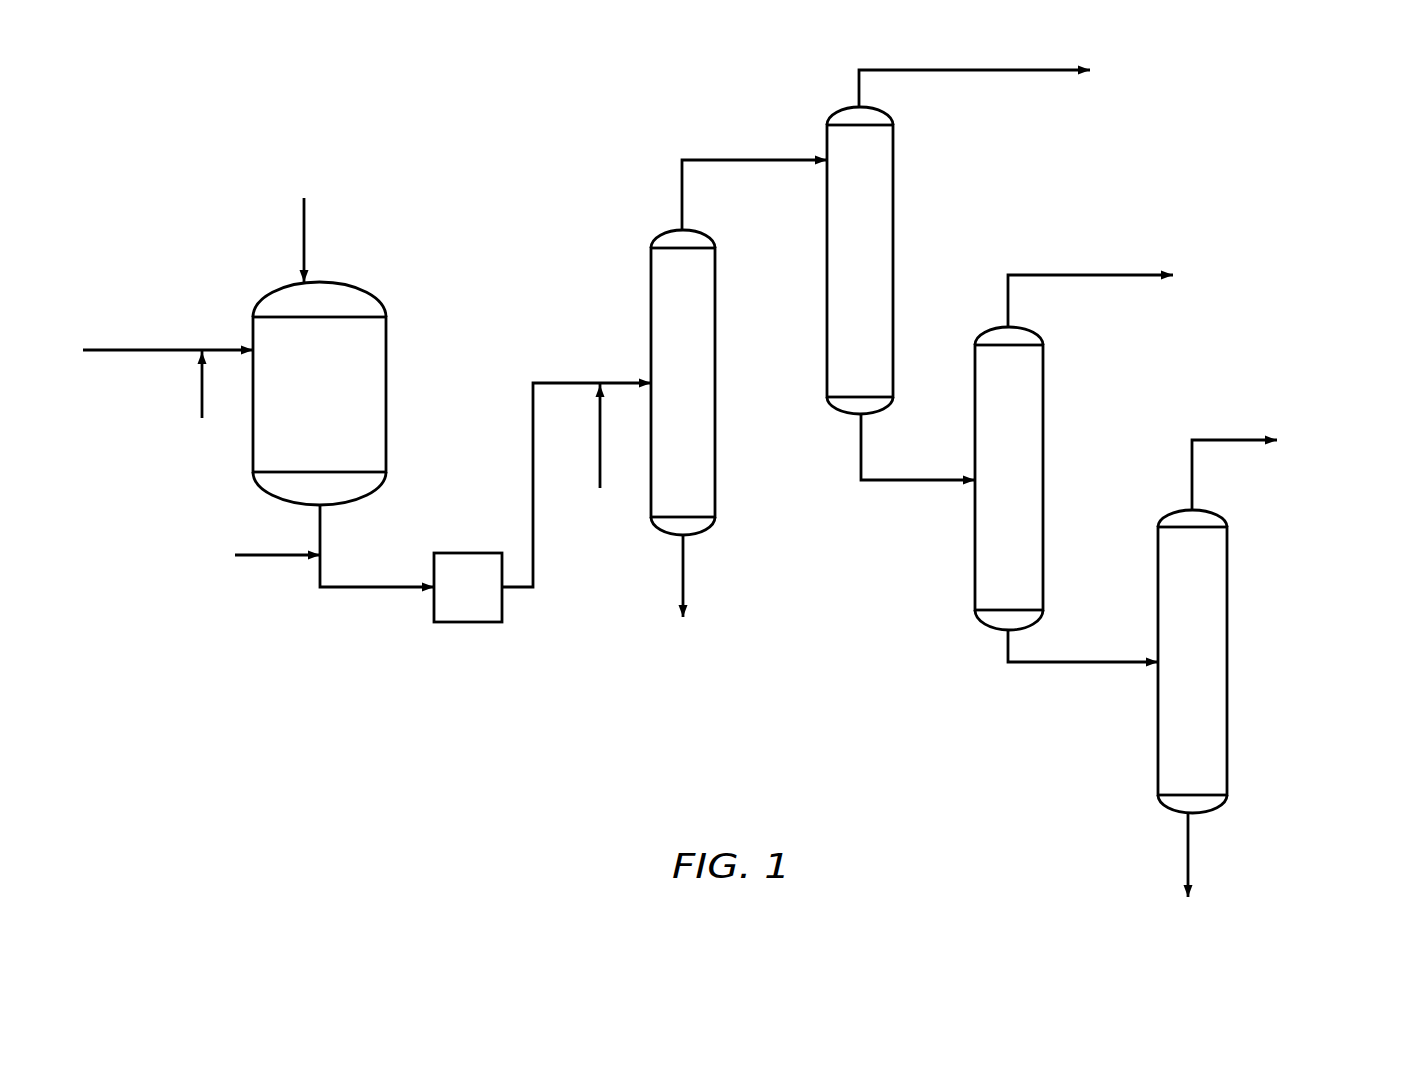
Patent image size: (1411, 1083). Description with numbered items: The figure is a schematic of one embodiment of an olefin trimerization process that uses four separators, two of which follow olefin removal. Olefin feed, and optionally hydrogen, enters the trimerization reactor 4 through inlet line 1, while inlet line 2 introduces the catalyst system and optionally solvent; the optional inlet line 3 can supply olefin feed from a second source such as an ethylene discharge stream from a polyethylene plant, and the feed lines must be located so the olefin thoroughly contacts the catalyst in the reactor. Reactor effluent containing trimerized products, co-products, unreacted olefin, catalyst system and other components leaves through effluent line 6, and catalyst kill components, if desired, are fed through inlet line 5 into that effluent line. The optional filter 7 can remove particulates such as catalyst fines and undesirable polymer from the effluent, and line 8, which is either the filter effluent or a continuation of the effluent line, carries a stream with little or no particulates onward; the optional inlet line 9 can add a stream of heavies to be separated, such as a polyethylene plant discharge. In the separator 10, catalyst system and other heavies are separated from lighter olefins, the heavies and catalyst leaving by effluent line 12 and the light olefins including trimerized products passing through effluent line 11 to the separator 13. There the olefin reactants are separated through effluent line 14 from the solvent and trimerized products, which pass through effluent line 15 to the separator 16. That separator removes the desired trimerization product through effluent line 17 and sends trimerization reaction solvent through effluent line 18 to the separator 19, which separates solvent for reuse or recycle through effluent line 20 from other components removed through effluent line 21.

The inlet line 1 is at (137, 351).
The inlet line 2 is at (305, 232).
The inlet line 3 is at (202, 398).
The trimerization reactor 4 is at (386, 335).
The inlet line 5 is at (275, 555).
The effluent line 6 is at (372, 587).
The filter 7 is at (452, 553).
The line 8 is at (533, 427).
The inlet line 9 is at (600, 448).
The separator 10 is at (651, 262).
The effluent line 11 is at (723, 160).
The effluent line 12 is at (683, 572).
The separator 13 is at (893, 143).
The effluent line 14 is at (1023, 70).
The effluent line 15 is at (892, 480).
The separator 16 is at (1043, 362).
The effluent line 17 is at (1065, 273).
The effluent line 18 is at (1057, 662).
The separator 19 is at (1227, 543).
The effluent line 20 is at (1213, 440).
The effluent line 21 is at (1188, 838).